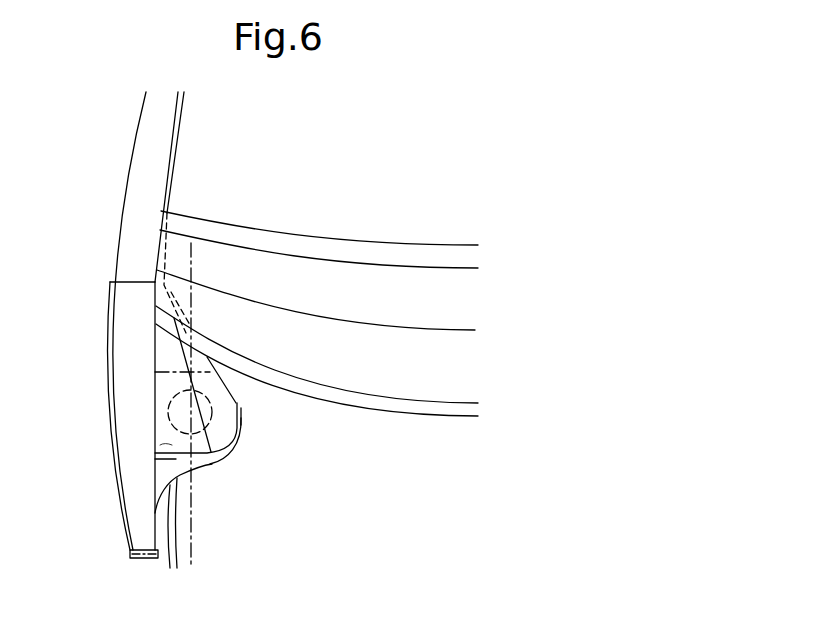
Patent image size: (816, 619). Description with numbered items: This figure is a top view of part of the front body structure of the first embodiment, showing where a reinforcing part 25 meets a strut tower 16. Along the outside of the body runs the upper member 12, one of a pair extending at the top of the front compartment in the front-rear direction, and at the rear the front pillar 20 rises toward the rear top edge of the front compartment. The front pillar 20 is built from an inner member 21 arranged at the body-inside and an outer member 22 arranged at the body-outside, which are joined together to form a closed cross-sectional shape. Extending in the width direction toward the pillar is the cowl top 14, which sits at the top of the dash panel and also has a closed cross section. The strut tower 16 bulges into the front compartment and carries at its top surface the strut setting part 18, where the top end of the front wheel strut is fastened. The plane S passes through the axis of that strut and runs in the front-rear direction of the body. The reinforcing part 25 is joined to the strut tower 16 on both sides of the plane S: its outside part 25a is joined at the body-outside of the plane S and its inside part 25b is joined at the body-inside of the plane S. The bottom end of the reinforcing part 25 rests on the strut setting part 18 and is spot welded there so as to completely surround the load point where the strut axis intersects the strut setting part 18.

The upper member 12 is at (135, 487).
The cowl top 14 is at (407, 353).
The strut tower 16 is at (220, 460).
The strut setting part 18 is at (239, 432).
The front pillar 20 is at (158, 103).
The inner member 21 is at (162, 248).
The outer member 22 is at (132, 178).
The reinforcing part 25 is at (195, 458).
The outside part 25a is at (168, 442).
The inside part 25b is at (241, 404).
The plane S is at (192, 262).